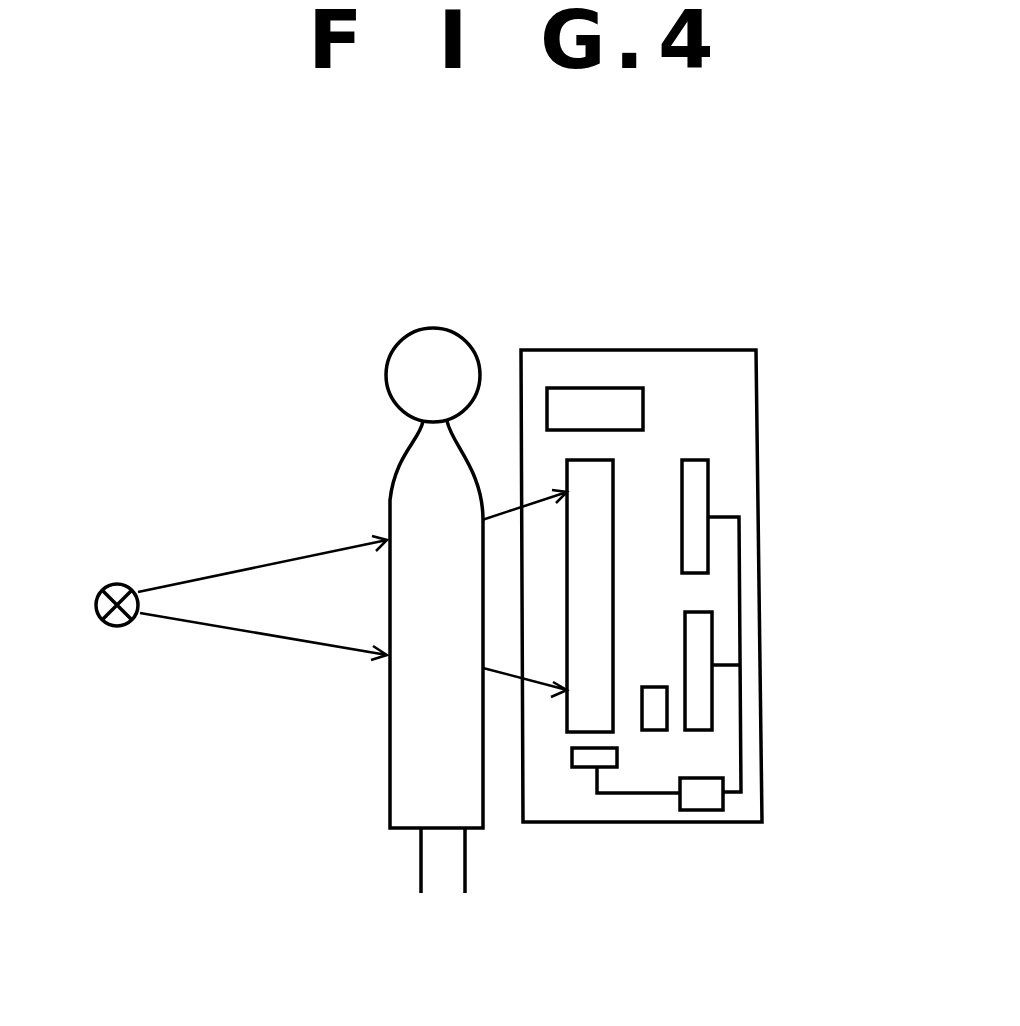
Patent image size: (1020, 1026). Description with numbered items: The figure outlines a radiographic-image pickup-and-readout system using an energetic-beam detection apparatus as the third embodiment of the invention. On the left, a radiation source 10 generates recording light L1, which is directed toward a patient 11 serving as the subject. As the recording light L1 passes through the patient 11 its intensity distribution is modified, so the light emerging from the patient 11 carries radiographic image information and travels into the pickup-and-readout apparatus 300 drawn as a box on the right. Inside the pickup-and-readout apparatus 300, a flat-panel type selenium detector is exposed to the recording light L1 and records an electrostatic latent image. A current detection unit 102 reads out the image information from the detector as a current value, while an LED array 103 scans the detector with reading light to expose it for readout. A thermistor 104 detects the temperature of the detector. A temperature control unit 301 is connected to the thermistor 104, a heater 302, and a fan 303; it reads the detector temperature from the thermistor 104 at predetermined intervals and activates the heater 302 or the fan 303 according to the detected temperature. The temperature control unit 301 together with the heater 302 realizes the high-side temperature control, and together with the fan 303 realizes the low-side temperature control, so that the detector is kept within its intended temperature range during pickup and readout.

The radiation source 10 is at (117, 583).
The recording light L1 is at (262, 583).
The patient 11 is at (390, 462).
The pickup-and-readout apparatus 300 is at (757, 425).
The current detection unit 102 is at (587, 388).
The heater 302 is at (708, 492).
The fan 303 is at (712, 637).
The LED array 103 is at (655, 730).
The thermistor 104 is at (578, 767).
The temperature control unit 301 is at (723, 803).